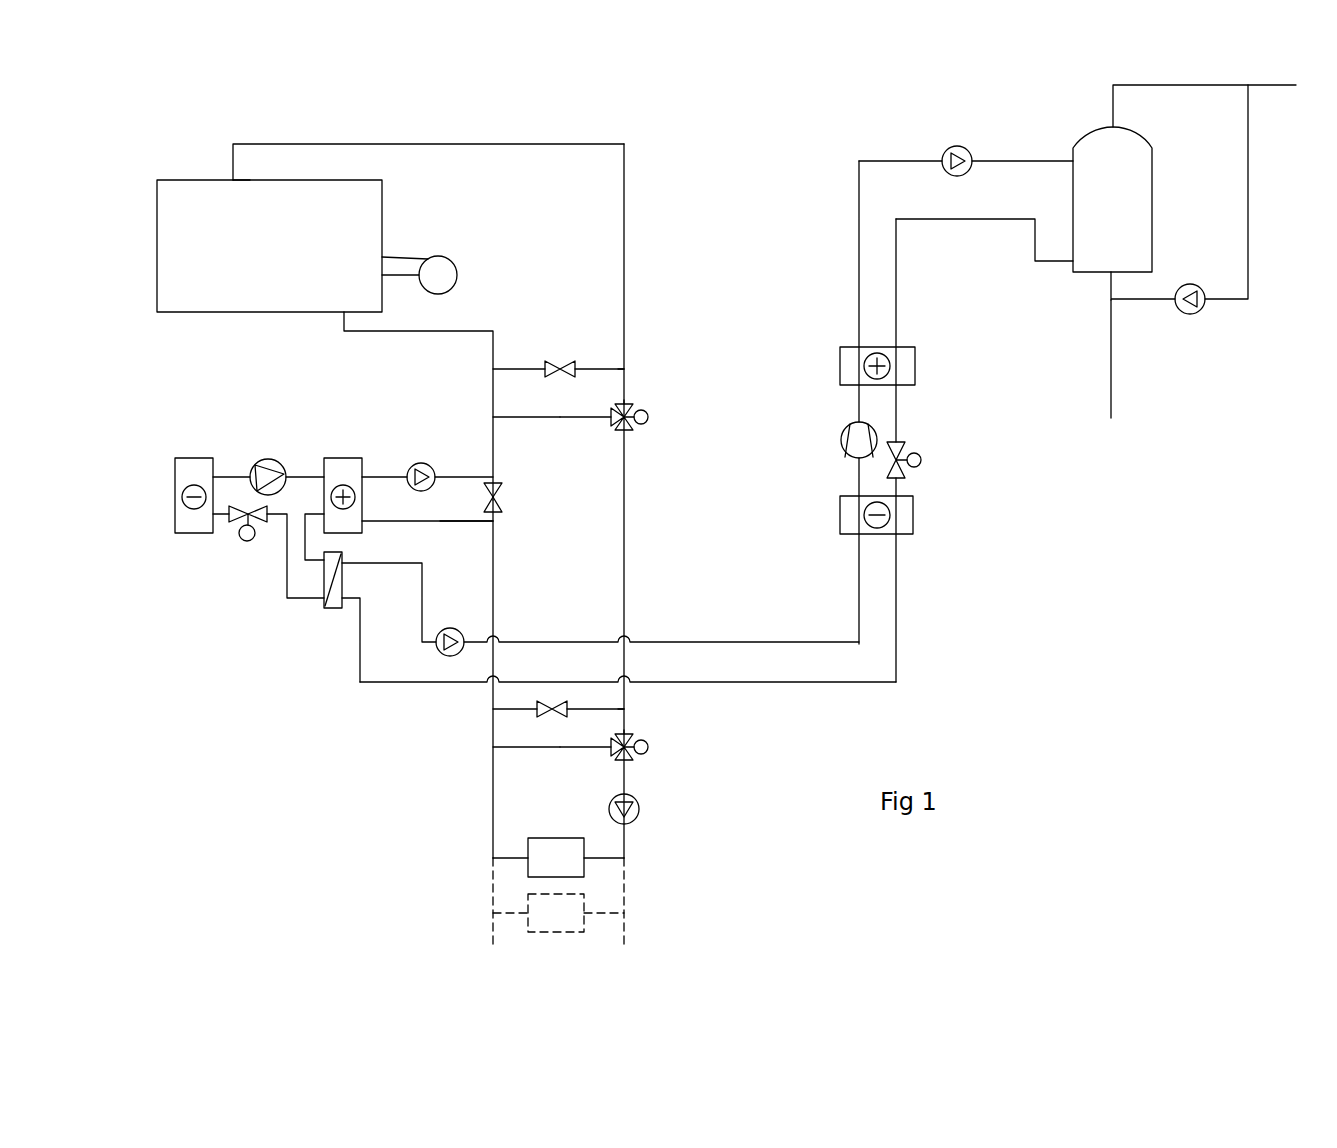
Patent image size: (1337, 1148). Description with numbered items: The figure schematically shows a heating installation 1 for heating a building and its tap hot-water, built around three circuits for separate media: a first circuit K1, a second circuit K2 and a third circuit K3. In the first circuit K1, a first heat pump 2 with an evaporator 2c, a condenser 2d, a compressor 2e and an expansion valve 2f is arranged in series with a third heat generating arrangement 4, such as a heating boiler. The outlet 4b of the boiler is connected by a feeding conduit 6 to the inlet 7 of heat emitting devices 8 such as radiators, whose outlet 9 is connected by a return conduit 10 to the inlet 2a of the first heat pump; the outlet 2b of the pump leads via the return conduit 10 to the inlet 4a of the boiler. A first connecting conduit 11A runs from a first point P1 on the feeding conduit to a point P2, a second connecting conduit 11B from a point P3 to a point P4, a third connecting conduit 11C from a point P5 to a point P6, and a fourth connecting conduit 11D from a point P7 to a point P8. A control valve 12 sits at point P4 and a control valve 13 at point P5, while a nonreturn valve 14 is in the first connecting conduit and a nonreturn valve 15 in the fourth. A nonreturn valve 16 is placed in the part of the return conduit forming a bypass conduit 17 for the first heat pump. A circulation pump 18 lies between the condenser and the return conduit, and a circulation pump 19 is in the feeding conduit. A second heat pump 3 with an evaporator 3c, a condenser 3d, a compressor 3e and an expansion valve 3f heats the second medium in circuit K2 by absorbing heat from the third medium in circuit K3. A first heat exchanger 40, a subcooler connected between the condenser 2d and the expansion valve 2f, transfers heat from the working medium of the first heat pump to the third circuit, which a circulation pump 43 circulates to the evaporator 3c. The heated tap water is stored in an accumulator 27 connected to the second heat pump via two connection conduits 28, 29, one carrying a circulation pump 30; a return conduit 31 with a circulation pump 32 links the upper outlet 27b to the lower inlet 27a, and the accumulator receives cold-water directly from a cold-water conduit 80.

The heating installation 1 is at (754, 740).
The first heat pump 2 is at (306, 446).
The inlet of the first heat pump 2a is at (492, 523).
The outlet of the first heat pump 2b is at (497, 478).
The evaporator 2c is at (196, 462).
The condenser 2d is at (346, 460).
The compressor 2e is at (266, 460).
The expansion valve 2f is at (234, 528).
The second heat pump 3 is at (954, 424).
The evaporator 3c is at (916, 524).
The condenser 3d is at (916, 368).
The compressor 3e is at (840, 438).
The expansion valve 3f is at (906, 472).
The third heat generating arrangement 4 is at (376, 230).
The inlet of the heating boiler 4a is at (340, 316).
The outlet of the heating boiler 4b is at (236, 182).
The feeding conduit 6 is at (628, 264).
The inlet of the heat emitting devices 7 is at (628, 858).
The heat emitting devices 8 is at (556, 850).
The outlet of the heat emitting devices 9 is at (493, 858).
The return conduit 10 is at (496, 600).
The first connecting conduit 11A is at (597, 368).
The second connecting conduit 11B is at (576, 419).
The third connecting conduit 11C is at (528, 749).
The fourth connecting conduit 11D is at (594, 706).
The control valve 12 is at (632, 428).
The control valve 13 is at (632, 758).
The nonreturn valve 14 is at (557, 360).
The nonreturn valve 15 is at (550, 700).
The nonreturn valve 16 is at (503, 495).
The bypass conduit 17 is at (503, 516).
The circulation pump 18 is at (424, 470).
The circulation pump 19 is at (640, 810).
The accumulator 27 is at (1154, 208).
The lower inlet of the accumulator 27a is at (1106, 278).
The upper outlet of the accumulator 27b is at (1117, 127).
The connection conduit 28 is at (962, 224).
The connection conduit 29 is at (892, 166).
The circulation pump 30 is at (952, 150).
The return conduit 31 is at (1252, 212).
The circulation pump 32 is at (1200, 310).
The first heat exchanger 40 is at (333, 604).
The circulation pump 43 is at (452, 628).
The cold-water conduit 80 is at (1113, 382).
The first circuit K1 is at (523, 129).
The second circuit K2 is at (1026, 144).
The third circuit K3 is at (732, 630).
The first point P1 is at (628, 368).
The point P2 is at (493, 369).
The point P3 is at (493, 417).
The point P4 is at (636, 410).
The point P5 is at (636, 742).
The point P6 is at (493, 747).
The point P7 is at (628, 709).
The point P8 is at (493, 709).